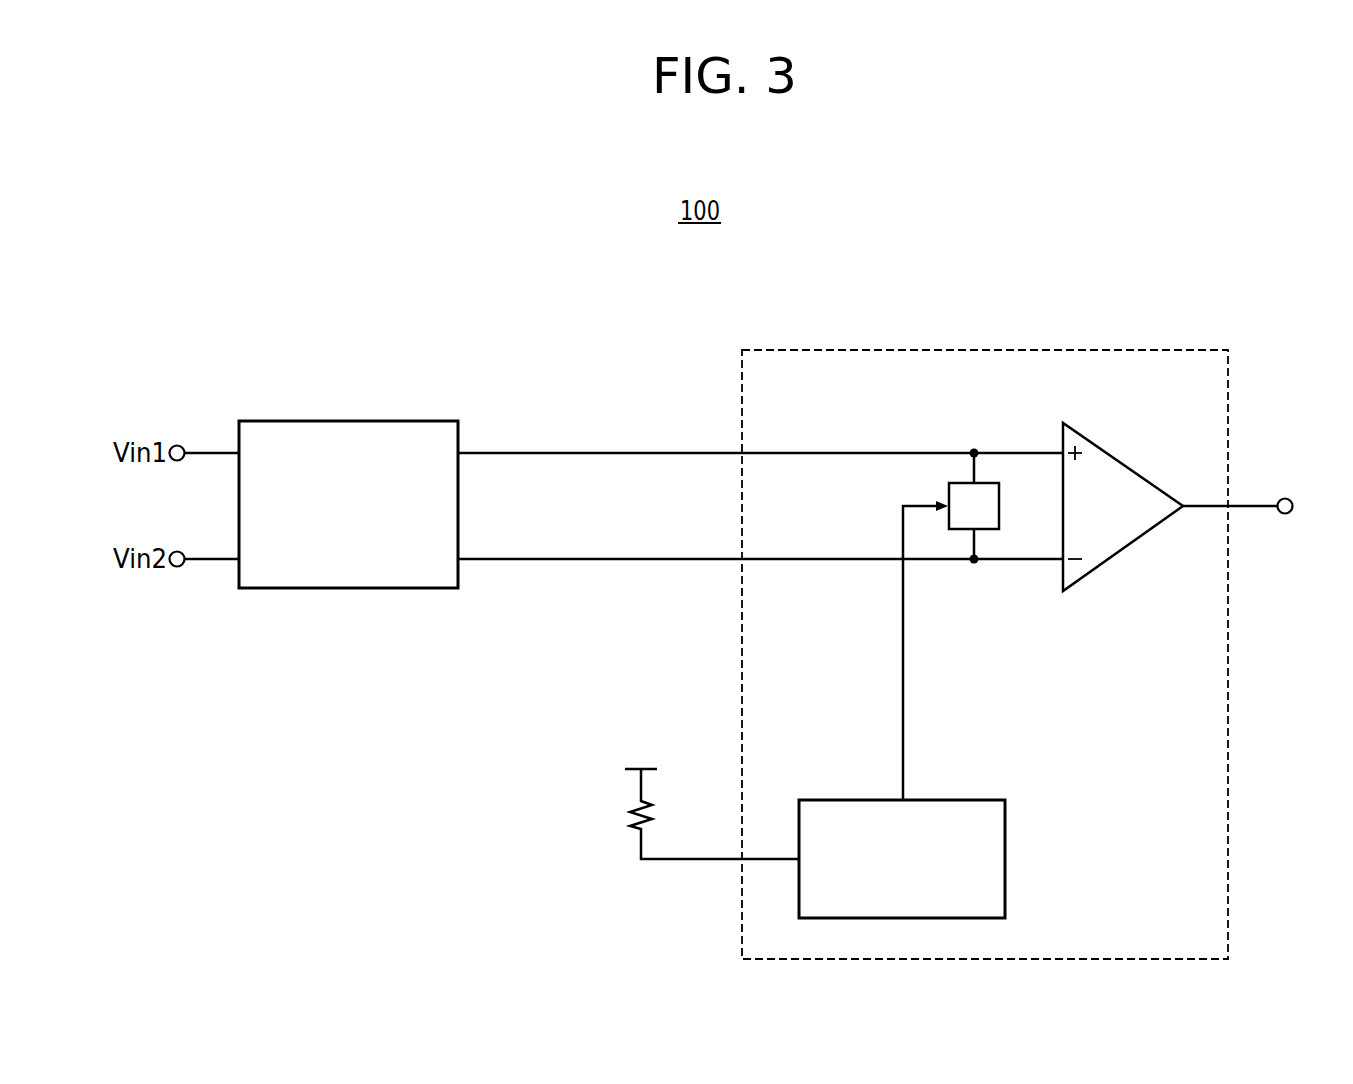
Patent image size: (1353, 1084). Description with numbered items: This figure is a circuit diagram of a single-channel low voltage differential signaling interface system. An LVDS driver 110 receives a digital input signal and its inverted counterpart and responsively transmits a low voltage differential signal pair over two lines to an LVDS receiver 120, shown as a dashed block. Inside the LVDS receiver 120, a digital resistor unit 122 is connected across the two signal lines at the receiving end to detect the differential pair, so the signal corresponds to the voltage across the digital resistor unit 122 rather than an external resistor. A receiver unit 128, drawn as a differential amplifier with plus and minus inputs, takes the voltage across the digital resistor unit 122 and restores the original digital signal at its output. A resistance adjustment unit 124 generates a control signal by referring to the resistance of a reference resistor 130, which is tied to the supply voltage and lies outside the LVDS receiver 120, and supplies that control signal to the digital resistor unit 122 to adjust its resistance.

The LVDS driver 110 is at (345, 421).
The LVDS receiver 120 is at (984, 350).
The digital resistor unit 122 is at (999, 505).
The resistance adjustment unit 124 is at (1005, 860).
The receiver unit 128 is at (1128, 460).
The reference resistor 130 is at (626, 808).